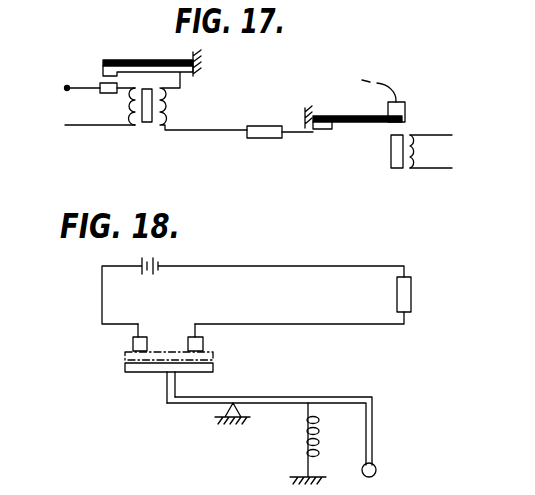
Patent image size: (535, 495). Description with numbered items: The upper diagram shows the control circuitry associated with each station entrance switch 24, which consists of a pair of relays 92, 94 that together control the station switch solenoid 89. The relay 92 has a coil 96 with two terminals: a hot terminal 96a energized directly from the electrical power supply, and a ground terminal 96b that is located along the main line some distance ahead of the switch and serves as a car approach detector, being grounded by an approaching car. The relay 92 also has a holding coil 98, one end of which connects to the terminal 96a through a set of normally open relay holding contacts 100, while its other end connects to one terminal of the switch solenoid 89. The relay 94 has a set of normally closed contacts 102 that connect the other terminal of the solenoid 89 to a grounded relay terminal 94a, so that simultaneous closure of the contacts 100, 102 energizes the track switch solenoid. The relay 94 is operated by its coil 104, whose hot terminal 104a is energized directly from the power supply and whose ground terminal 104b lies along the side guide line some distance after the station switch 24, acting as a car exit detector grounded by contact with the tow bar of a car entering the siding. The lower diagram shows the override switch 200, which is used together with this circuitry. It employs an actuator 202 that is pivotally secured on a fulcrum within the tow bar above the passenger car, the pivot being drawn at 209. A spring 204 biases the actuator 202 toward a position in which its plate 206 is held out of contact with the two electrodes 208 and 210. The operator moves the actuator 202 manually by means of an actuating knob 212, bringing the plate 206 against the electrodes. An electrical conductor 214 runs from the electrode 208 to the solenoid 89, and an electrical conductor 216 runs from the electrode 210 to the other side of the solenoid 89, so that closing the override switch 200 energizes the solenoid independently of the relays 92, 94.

In FIG. 17, the relay holding contacts 100 is at (124, 56).
In FIG. 17, the relay 92 is at (205, 66).
In FIG. 17, the coil 96 is at (127, 118).
In FIG. 17, the hot terminal 96a is at (78, 86).
In FIG. 17, the ground terminal 96b is at (82, 126).
In FIG. 17, the holding coil 98 is at (168, 112).
In FIG. 17, the station entrance switch 24 is at (271, 141).
In FIG. 17, the station switch solenoid 89 is at (262, 126).
In FIG. 18, the station switch solenoid 89 is at (396, 297).
In FIG. 17, the relay 94 is at (436, 27).
In FIG. 17, the grounded relay terminal 94a is at (384, 57).
In FIG. 17, the normally closed contacts 102 is at (450, 78).
In FIG. 17, the coil 104 is at (420, 170).
In FIG. 17, the hot terminal 104a is at (416, 115).
In FIG. 17, the ground terminal 104b is at (468, 203).
In FIG. 18, the override switch 200 is at (321, 260).
In FIG. 18, the electrical conductor 214 is at (264, 268).
In FIG. 18, the electrical conductor 216 is at (312, 322).
In FIG. 18, the electrode 208 is at (128, 341).
In FIG. 18, the electrode 210 is at (204, 346).
In FIG. 18, the plate 206 is at (125, 370).
In FIG. 18, the actuator 202 is at (322, 396).
In FIG. 18, the pivot 209 is at (214, 419).
In FIG. 18, the spring 204 is at (300, 440).
In FIG. 18, the actuating knob 212 is at (377, 467).